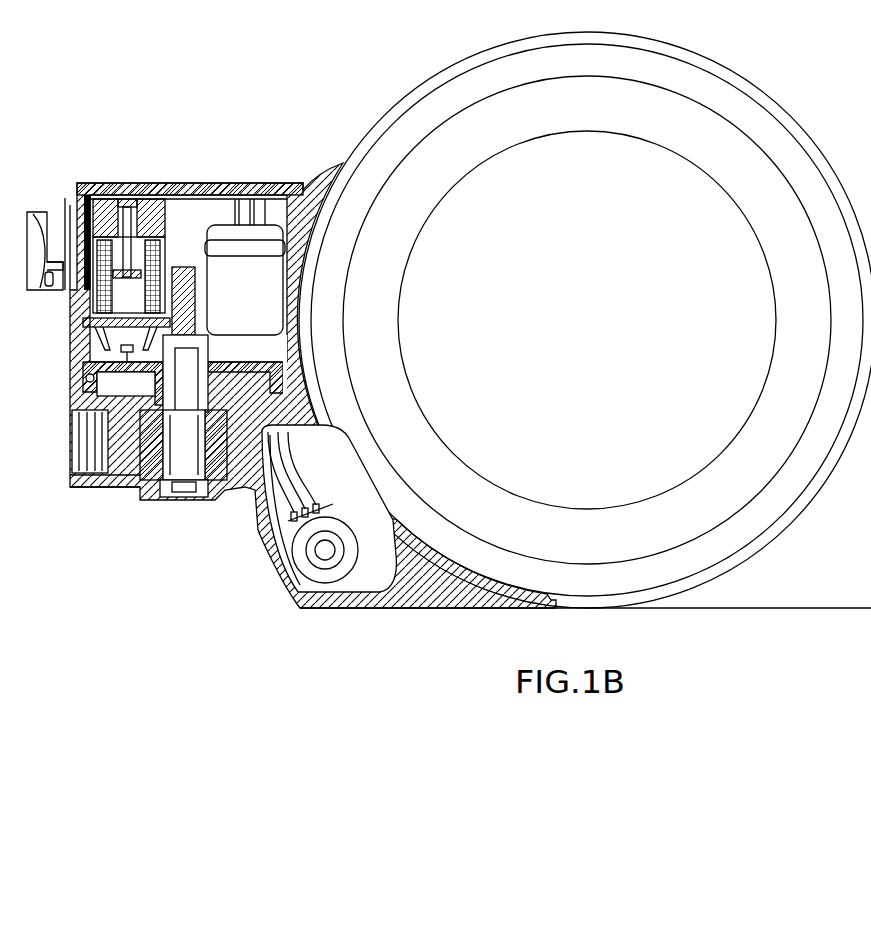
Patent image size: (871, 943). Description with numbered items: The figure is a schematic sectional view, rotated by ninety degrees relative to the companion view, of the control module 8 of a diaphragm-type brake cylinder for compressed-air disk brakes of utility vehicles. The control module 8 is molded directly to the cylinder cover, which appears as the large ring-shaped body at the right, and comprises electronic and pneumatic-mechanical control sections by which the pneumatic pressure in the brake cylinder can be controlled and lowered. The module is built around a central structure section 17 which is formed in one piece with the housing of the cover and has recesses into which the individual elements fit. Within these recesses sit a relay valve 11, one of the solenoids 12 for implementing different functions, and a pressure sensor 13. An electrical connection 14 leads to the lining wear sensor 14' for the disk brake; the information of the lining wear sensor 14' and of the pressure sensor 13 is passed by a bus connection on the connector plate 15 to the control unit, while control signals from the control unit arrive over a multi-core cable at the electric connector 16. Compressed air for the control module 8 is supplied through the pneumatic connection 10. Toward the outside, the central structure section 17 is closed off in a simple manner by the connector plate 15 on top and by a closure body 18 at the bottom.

The control module 8 is at (113, 497).
The pneumatic connection 10 is at (72, 454).
The relay valve 11 is at (140, 486).
The solenoid 12 is at (152, 206).
The pressure sensor 13 is at (267, 232).
The electrical connection 14 is at (260, 487).
The lining wear sensor 14' is at (293, 551).
The connector plate 15 is at (212, 190).
The electric connector 16 is at (63, 228).
The central structure section 17 is at (314, 207).
The closure body 18 is at (83, 488).